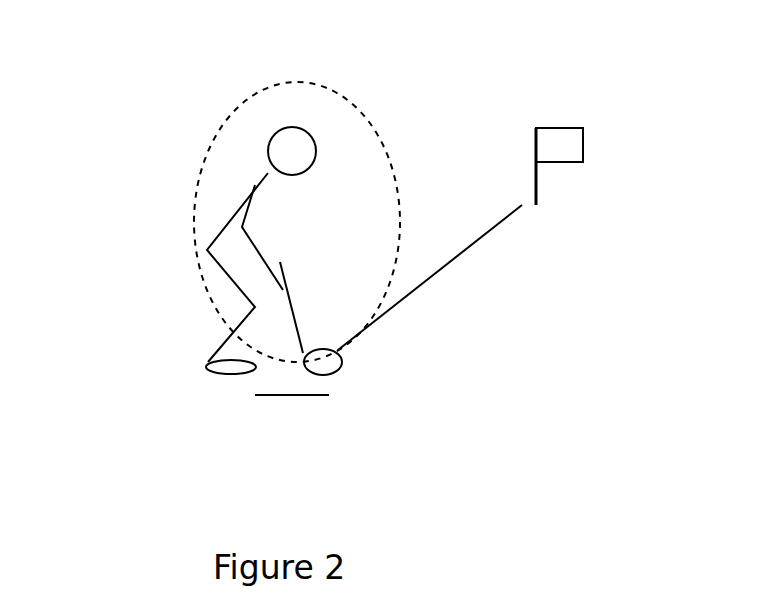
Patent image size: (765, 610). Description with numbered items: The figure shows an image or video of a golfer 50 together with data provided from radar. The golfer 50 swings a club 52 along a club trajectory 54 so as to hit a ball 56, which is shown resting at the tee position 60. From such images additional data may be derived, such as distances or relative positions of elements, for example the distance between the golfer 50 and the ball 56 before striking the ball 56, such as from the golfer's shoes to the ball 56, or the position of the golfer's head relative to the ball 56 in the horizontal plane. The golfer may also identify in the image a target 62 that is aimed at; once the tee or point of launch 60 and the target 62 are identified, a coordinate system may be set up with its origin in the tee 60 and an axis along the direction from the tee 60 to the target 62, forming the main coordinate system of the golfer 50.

The golfer 50 is at (205, 202).
The club 52 is at (300, 280).
The club trajectory 54 is at (200, 130).
The ball 56 is at (365, 347).
The tee position 60 is at (363, 369).
The target 62 is at (537, 108).